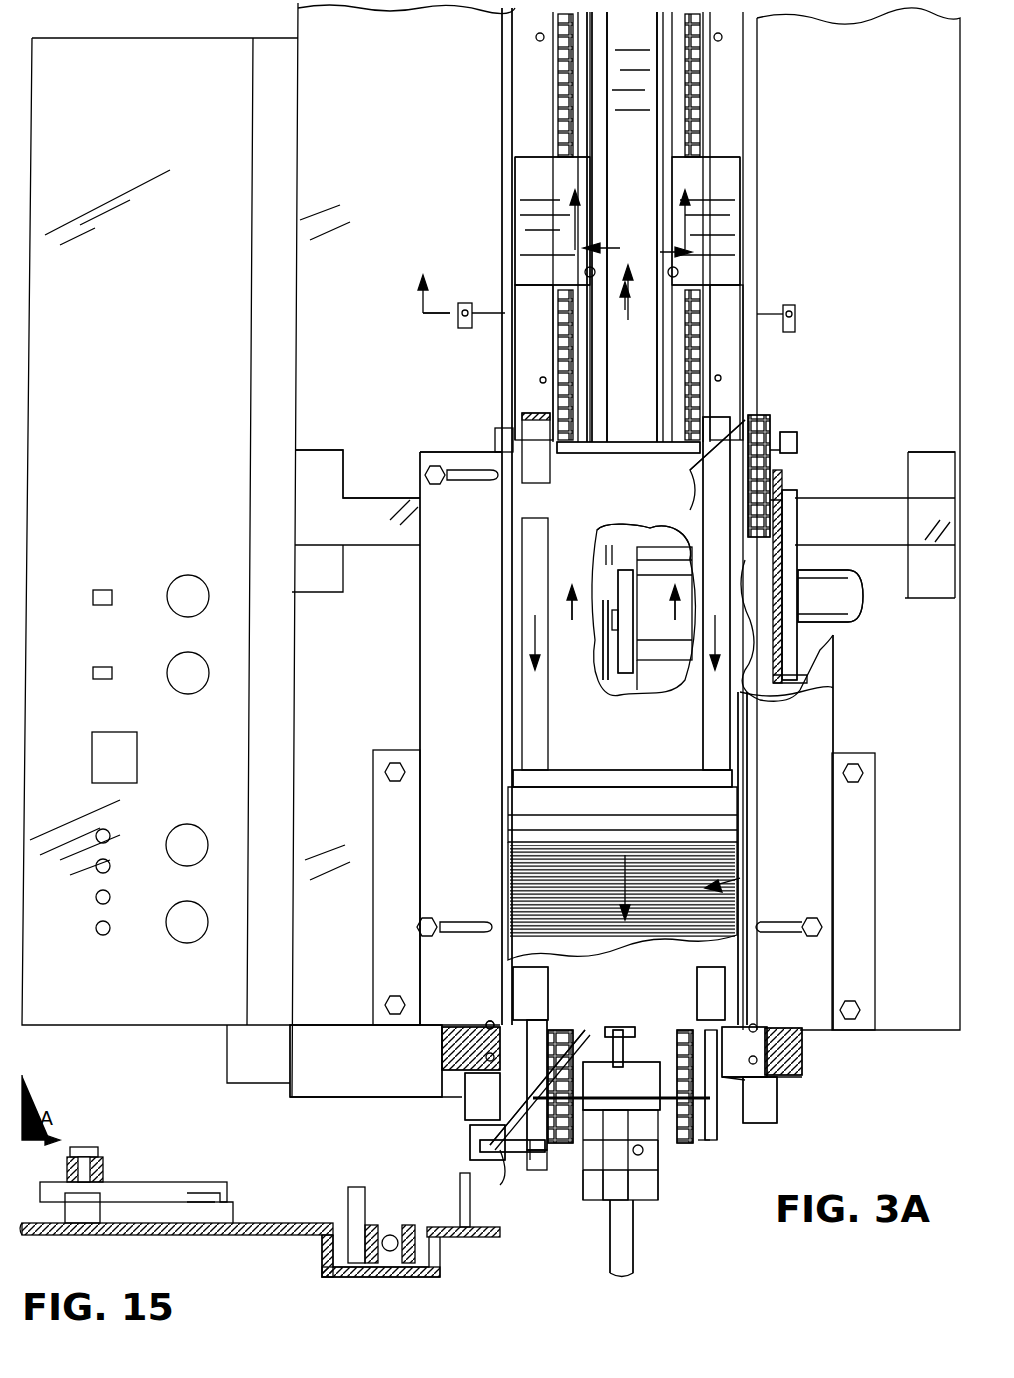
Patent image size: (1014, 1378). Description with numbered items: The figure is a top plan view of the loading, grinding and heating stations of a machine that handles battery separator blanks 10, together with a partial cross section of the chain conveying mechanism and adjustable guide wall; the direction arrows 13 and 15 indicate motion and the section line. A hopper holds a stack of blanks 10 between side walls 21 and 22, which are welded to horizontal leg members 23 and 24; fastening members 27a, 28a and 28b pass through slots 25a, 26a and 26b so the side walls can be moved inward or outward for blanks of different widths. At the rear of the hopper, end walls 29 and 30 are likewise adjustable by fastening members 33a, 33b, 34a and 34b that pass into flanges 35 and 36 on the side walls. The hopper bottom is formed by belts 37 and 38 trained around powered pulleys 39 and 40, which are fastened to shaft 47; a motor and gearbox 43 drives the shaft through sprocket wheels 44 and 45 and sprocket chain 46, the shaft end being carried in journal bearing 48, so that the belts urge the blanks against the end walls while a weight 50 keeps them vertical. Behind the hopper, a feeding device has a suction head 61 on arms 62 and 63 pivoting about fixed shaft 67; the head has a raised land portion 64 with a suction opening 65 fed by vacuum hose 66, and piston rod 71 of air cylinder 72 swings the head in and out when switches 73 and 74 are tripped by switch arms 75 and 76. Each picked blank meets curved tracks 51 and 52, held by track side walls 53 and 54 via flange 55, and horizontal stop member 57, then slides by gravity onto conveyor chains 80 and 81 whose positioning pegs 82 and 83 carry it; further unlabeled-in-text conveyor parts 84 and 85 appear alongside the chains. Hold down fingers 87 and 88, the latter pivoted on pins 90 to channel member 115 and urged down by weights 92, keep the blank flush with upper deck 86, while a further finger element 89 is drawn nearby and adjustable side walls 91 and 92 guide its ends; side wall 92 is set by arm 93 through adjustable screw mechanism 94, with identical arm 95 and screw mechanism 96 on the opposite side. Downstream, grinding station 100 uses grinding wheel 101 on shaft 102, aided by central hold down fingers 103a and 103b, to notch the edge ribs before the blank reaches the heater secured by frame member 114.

In FIG. 3A, the battery separator blank 10 is at (691, 445).
In FIG. 3A, the direction arrow 13 is at (675, 620).
In FIG. 3A, the direction arrow 15 is at (523, 325).
In FIG. 3A, the hopper side wall 21 is at (747, 745).
In FIG. 3A, the hopper side wall 22 is at (502, 730).
In FIG. 3A, the horizontal leg member 23 is at (815, 745).
In FIG. 3A, the horizontal leg member 24 is at (420, 680).
In FIG. 3A, the slot 25a is at (775, 934).
In FIG. 3A, the slot 26a is at (470, 934).
In FIG. 3A, the slot 26b is at (482, 482).
In FIG. 3A, the fastening member 27a is at (805, 917).
In FIG. 3A, the fastening member 28a is at (428, 917).
In FIG. 3A, the fastening member 28b is at (437, 487).
In FIG. 3A, the end wall 29 is at (800, 1073).
In FIG. 3A, the end wall 30 is at (445, 1075).
In FIG. 3A, the fastening member 33a is at (753, 1027).
In FIG. 3A, the fastening member 33b is at (770, 1080).
In FIG. 3A, the fastening member 34a is at (488, 1022).
In FIG. 3A, the fastening member 34b is at (480, 1105).
In FIG. 3A, the flange 35 is at (775, 1030).
In FIG. 3A, the flange 36 is at (478, 1030).
In FIG. 3A, the belt 37 is at (700, 973).
In FIG. 3A, the belt 38 is at (550, 977).
In FIG. 3A, the powered pulley 39 is at (728, 415).
In FIG. 3A, the powered pulley 40 is at (537, 412).
In FIG. 3A, the motor and gearbox 43 is at (835, 615).
In FIG. 3A, the sprocket wheel 44 is at (745, 527).
In FIG. 3A, the sprocket wheel 45 is at (785, 420).
In FIG. 3A, the sprocket chain 46 is at (760, 415).
In FIG. 3A, the shaft 47 is at (640, 450).
In FIG. 3A, the journal bearing 48 is at (789, 415).
In FIG. 3A, the weight 50 is at (600, 778).
In FIG. 3A, the curved track 51 is at (732, 1090).
In FIG. 3A, the curved track 52 is at (528, 1160).
In FIG. 3A, the track side wall 53 is at (770, 1120).
In FIG. 3A, the track side wall 54 is at (480, 1140).
In FIG. 3A, the flange 55 is at (748, 1090).
In FIG. 3A, the horizontal stop member 57 is at (710, 1125).
In FIG. 3A, the suction head 61 is at (635, 1185).
In FIG. 3A, the arm 62 is at (667, 1199).
In FIG. 3A, the arm 63 is at (572, 1199).
In FIG. 3A, the raised land portion 64 is at (610, 1175).
In FIG. 3A, the suction opening 65 is at (645, 1152).
In FIG. 3A, the vacuum hose 66 is at (615, 1260).
In FIG. 3A, the fixed shaft 67 is at (605, 1075).
In FIG. 3A, the piston rod 71 is at (623, 1048).
In FIG. 3A, the air cylinder 72 is at (622, 1027).
In FIG. 3A, the switch 73 is at (491, 1173).
In FIG. 3A, the switch 74 is at (485, 1148).
In FIG. 3A, the switch arm 75 is at (544, 1169).
In FIG. 3A, the switch arm 76 is at (553, 1068).
In FIG. 3A, the conveyor chain 80 is at (686, 1167).
In FIG. 3A, the conveyor chain 81 is at (557, 1143).
In FIG. 15, the conveyor chain 81 is at (378, 1225).
In FIG. 3A, the positioning peg 82 is at (726, 734).
In FIG. 3A, the positioning peg 83 is at (857, 1042).
In FIG. 15, the positioning peg 83 is at (352, 1187).
In FIG. 3A, the bearing 84 is at (680, 1035).
In FIG. 3A, the rod 85 is at (546, 1068).
In FIG. 15, the upper deck 86 is at (478, 1240).
In FIG. 3A, the hold down finger 87 is at (690, 183).
In FIG. 3A, the hold down finger 88 is at (590, 182).
In FIG. 15, the hold down finger 88 is at (460, 1195).
In FIG. 3A, the roller 89 is at (678, 272).
In FIG. 3A, the pin 90 is at (585, 272).
In FIG. 3A, the adjustable side wall 91 is at (660, 418).
In FIG. 3A, the adjustable side wall 92 is at (590, 440).
In FIG. 15, the adjustable side wall 92 is at (228, 1205).
In FIG. 3A, the arm 93 is at (485, 315).
In FIG. 15, the arm 93 is at (145, 1195).
In FIG. 3A, the adjustable screw mechanism 94 is at (475, 290).
In FIG. 15, the adjustable screw mechanism 94 is at (103, 1160).
In FIG. 3A, the arm 95 is at (792, 296).
In FIG. 3A, the screw mechanism 96 is at (795, 328).
In FIG. 3A, the grinding station 100 is at (615, 545).
In FIG. 3A, the grinding wheel 101 is at (618, 590).
In FIG. 3A, the shaft 102 is at (612, 625).
In FIG. 3A, the central hold down finger 103a is at (640, 685).
In FIG. 3A, the central hold down finger 103b is at (603, 655).
In FIG. 3A, the frame member 114 is at (872, 503).
In FIG. 3A, the channel member 115 is at (605, 370).